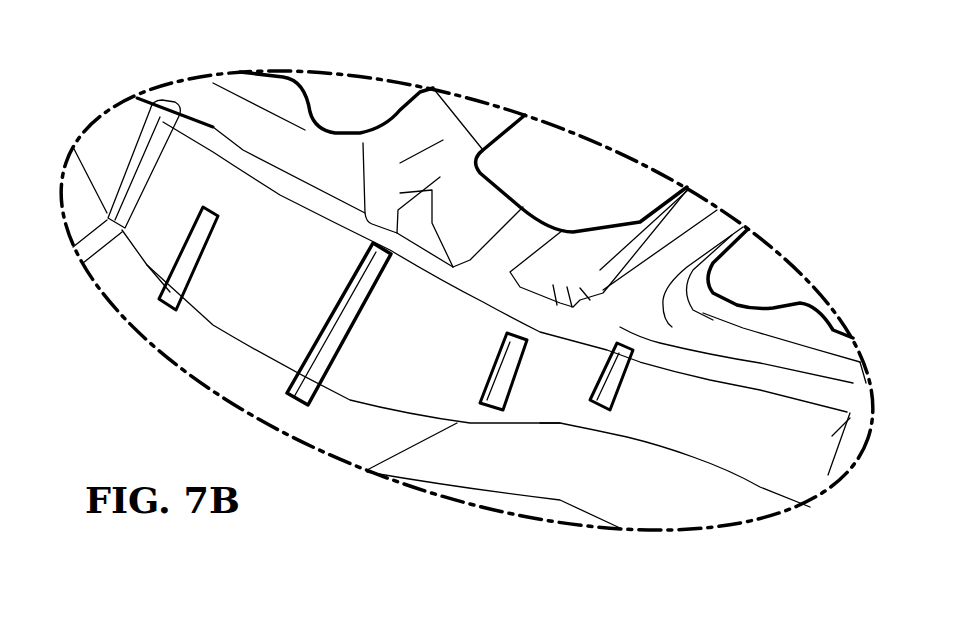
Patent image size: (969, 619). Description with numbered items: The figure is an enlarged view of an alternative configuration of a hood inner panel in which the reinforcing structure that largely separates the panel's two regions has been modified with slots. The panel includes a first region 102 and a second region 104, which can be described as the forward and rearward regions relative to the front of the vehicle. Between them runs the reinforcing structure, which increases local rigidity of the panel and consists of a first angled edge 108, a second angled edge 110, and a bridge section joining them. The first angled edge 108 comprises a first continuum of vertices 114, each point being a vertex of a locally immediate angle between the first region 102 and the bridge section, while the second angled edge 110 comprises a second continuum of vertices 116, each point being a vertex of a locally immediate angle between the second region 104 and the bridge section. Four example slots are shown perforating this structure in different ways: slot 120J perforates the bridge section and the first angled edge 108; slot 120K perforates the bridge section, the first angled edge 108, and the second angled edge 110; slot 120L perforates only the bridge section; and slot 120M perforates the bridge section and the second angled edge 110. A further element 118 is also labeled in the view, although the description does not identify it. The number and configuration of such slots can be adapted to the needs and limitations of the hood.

The first region 102 is at (355, 432).
The second region 104 is at (722, 365).
The first angled edge 108 is at (147, 265).
The second angled edge 110 is at (247, 173).
The first continuum of vertices 114 is at (213, 327).
The second continuum of vertices 116 is at (467, 303).
The inner surface 118 is at (643, 407).
The slot 120J is at (203, 228).
The slot 120K is at (357, 288).
The slot 120L is at (520, 372).
The slot 120M is at (622, 380).